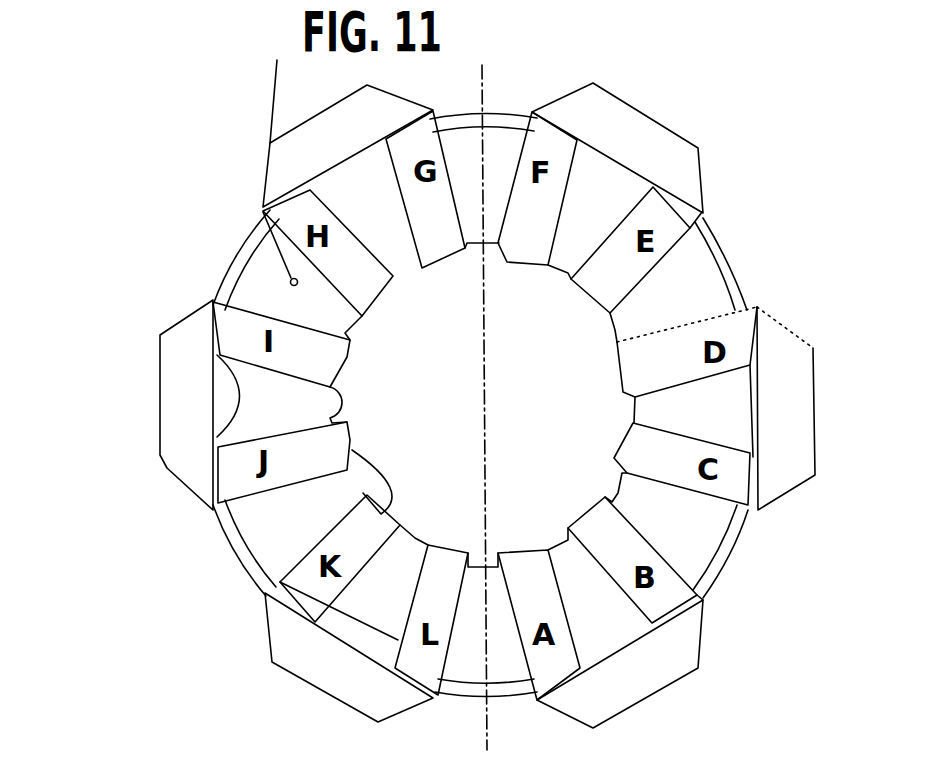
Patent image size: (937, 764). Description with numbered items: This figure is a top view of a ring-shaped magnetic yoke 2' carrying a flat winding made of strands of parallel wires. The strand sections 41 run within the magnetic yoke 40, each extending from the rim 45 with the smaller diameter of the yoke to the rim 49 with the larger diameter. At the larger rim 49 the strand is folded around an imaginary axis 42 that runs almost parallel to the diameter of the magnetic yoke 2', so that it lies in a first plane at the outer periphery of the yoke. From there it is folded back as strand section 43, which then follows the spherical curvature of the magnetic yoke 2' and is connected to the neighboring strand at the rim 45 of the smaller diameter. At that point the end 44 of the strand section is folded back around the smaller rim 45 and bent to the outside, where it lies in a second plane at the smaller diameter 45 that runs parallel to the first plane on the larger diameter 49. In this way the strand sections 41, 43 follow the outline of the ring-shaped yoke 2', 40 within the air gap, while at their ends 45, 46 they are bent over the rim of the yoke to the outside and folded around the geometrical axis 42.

The magnetic yoke 40 is at (250, 245).
The strand section 41 is at (213, 510).
The imaginary axis 42 is at (270, 88).
The strand section 43 is at (280, 582).
The end of the strand section 44 is at (350, 450).
The rim with the smaller diameter 45 is at (347, 365).
The end of the strand sections 46 is at (185, 320).
The rim with the larger diameter 49 is at (215, 367).
The magnetic yoke 2' is at (183, 225).